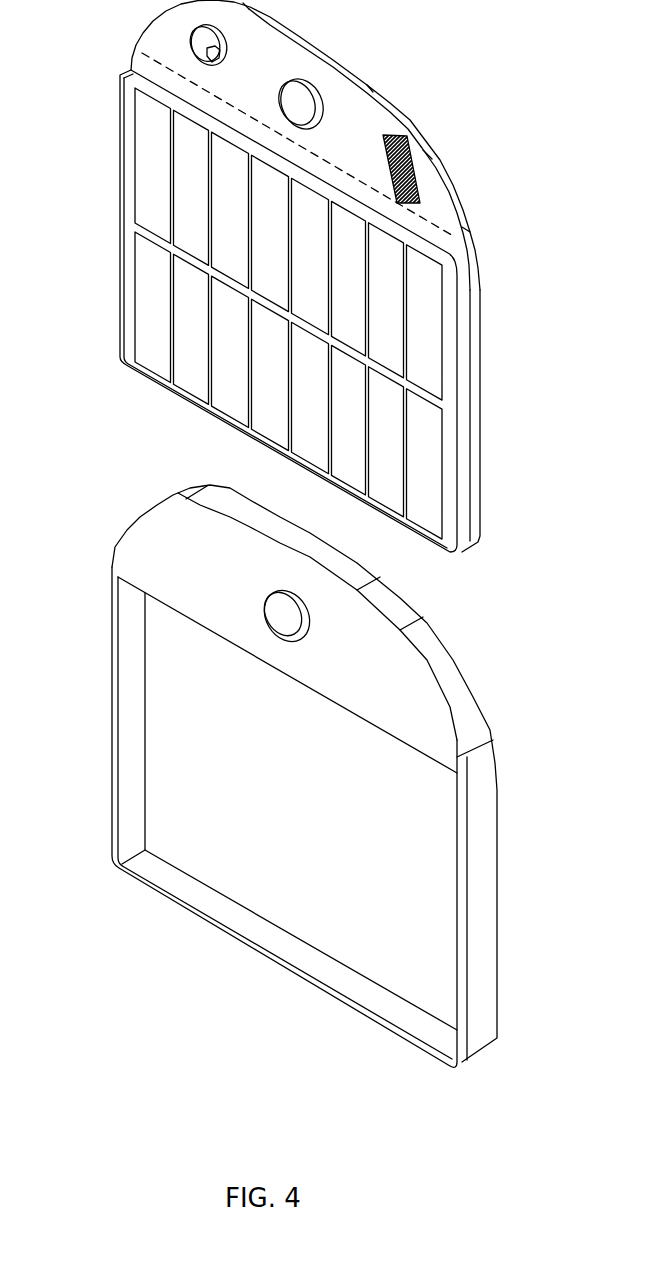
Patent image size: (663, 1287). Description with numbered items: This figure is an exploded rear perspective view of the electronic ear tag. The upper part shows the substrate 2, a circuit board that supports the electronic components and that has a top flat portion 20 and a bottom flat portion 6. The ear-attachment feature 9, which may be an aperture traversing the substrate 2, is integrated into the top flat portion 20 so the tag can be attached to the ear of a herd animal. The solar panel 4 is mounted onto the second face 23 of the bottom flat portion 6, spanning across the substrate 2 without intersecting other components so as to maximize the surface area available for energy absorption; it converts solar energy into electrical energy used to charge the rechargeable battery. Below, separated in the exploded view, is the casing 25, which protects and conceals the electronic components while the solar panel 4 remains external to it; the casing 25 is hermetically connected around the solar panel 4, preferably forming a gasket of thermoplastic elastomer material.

The substrate 2 is at (458, 228).
The solar panel 4 is at (363, 143).
The bottom flat portion 6 is at (480, 352).
The ear-attachment feature 9 is at (292, 104).
The top flat portion 20 is at (202, 60).
The second face 23 is at (130, 237).
The casing 25 is at (127, 568).